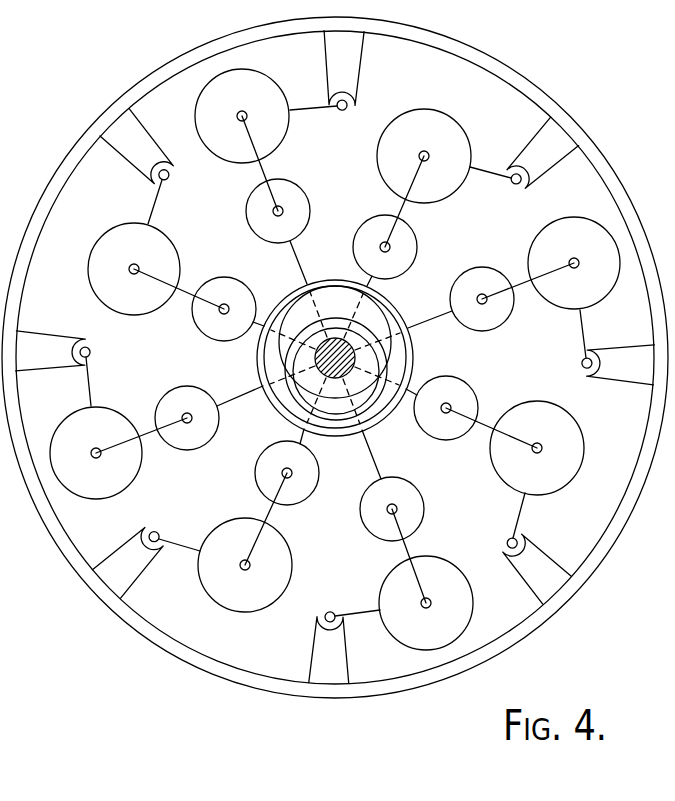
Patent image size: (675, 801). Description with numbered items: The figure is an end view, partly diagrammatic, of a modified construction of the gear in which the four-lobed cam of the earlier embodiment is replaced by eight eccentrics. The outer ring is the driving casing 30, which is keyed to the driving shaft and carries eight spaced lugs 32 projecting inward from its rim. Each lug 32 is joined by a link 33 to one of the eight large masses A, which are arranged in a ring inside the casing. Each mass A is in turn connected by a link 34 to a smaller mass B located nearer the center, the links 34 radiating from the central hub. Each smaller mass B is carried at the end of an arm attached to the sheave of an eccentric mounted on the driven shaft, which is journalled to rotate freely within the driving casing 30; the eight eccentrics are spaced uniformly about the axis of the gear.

The driving casing 30 is at (486, 61).
The lug 32 is at (543, 165).
The link 33 is at (495, 174).
The link 34 is at (404, 209).
The mass A is at (457, 124).
The smaller mass B is at (416, 250).